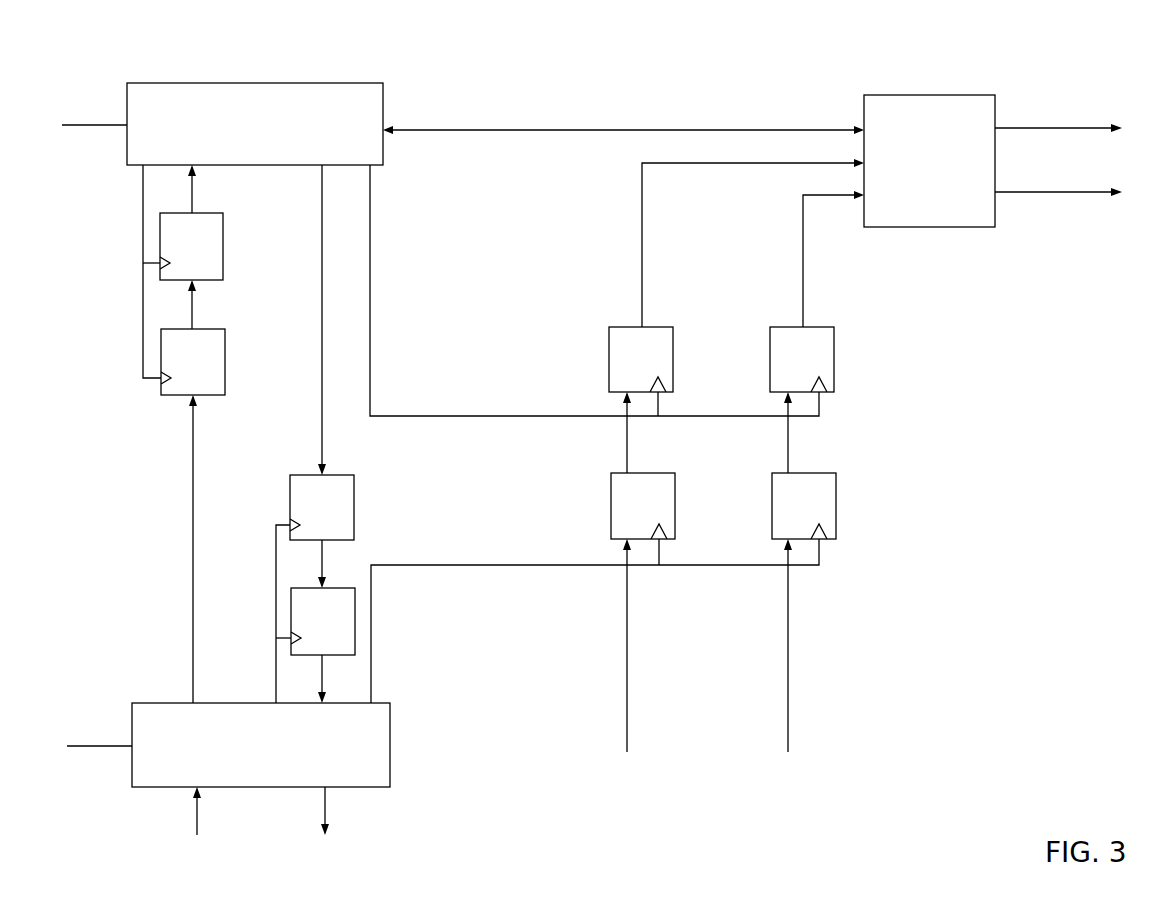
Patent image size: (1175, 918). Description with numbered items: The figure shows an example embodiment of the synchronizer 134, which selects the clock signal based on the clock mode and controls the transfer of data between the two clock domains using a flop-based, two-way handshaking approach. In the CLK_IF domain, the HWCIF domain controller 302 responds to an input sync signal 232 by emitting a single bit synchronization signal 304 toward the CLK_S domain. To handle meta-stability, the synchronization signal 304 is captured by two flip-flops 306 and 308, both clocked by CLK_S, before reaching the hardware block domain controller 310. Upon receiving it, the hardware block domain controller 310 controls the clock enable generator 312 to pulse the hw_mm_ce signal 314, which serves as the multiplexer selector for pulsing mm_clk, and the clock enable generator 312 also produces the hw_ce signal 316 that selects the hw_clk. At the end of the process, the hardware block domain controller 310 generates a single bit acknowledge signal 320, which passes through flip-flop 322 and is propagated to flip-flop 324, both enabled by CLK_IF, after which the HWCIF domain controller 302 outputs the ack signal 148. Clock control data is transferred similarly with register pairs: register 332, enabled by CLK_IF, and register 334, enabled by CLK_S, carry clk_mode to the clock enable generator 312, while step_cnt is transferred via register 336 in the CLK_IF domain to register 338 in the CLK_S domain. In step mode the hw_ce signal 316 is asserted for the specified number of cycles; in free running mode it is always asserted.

The synchronizer 134 is at (570, 66).
The hardware block domain controller 310 is at (348, 83).
The flip-flop 308 is at (212, 213).
The flip-flop 306 is at (213, 329).
The synchronization signal 304 is at (193, 540).
The acknowledge signal 320 is at (322, 360).
The flip-flop 322 is at (338, 475).
The flip-flop 324 is at (333, 588).
The HWCIF domain controller 302 is at (380, 703).
The input sync signal 232 is at (197, 826).
The ack signal 148 is at (325, 810).
The clock enable generator 312 is at (912, 95).
The hw_ce signal 316 is at (1027, 130).
The hw_mm_ce signal 314 is at (1012, 194).
The register 338 is at (655, 327).
The register 334 is at (818, 327).
The register 336 is at (650, 473).
The register 332 is at (803, 473).